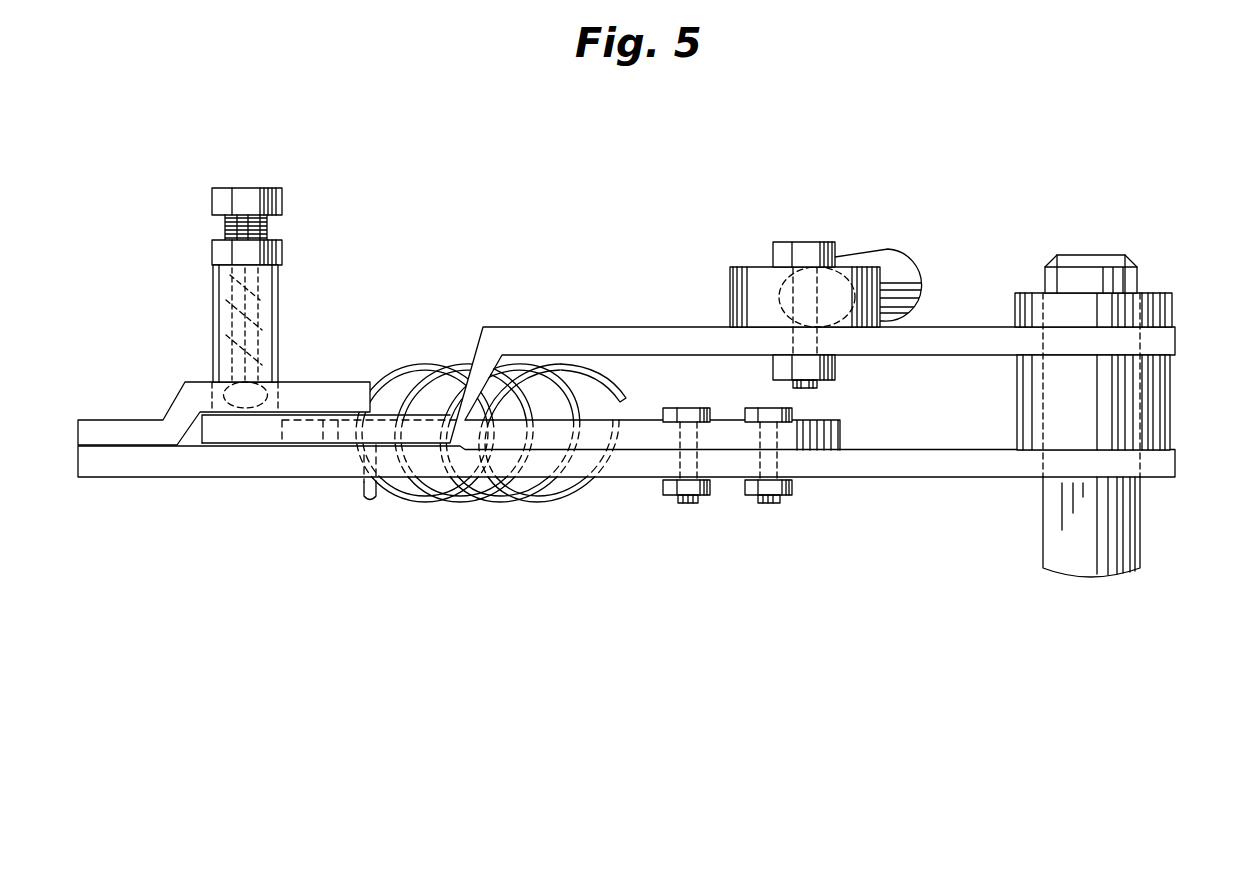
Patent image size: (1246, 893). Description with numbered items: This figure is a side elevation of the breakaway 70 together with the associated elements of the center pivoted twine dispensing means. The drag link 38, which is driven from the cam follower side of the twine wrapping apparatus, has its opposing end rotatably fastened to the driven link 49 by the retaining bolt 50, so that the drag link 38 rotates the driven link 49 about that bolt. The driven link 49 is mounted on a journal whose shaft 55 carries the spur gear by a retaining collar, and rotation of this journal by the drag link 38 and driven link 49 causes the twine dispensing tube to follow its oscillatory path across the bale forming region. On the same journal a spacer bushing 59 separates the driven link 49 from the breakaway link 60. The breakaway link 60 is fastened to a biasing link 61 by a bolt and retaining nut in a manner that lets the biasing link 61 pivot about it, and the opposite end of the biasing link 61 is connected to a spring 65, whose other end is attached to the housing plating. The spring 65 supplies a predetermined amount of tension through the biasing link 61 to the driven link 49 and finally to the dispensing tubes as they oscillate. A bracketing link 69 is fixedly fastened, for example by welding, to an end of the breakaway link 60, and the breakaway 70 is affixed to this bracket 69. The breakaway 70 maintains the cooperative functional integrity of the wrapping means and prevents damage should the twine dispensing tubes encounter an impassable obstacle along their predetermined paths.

The drag link 38 is at (897, 250).
The driven link 49 is at (572, 327).
The retaining bolt 50 is at (802, 242).
The shaft 55 is at (1103, 255).
The spacer bushing 59 is at (1172, 409).
The breakaway link 60 is at (863, 478).
The biasing link 61 is at (823, 421).
The spring 65 is at (497, 505).
The bracketing link 69 is at (327, 382).
The breakaway 70 is at (252, 181).